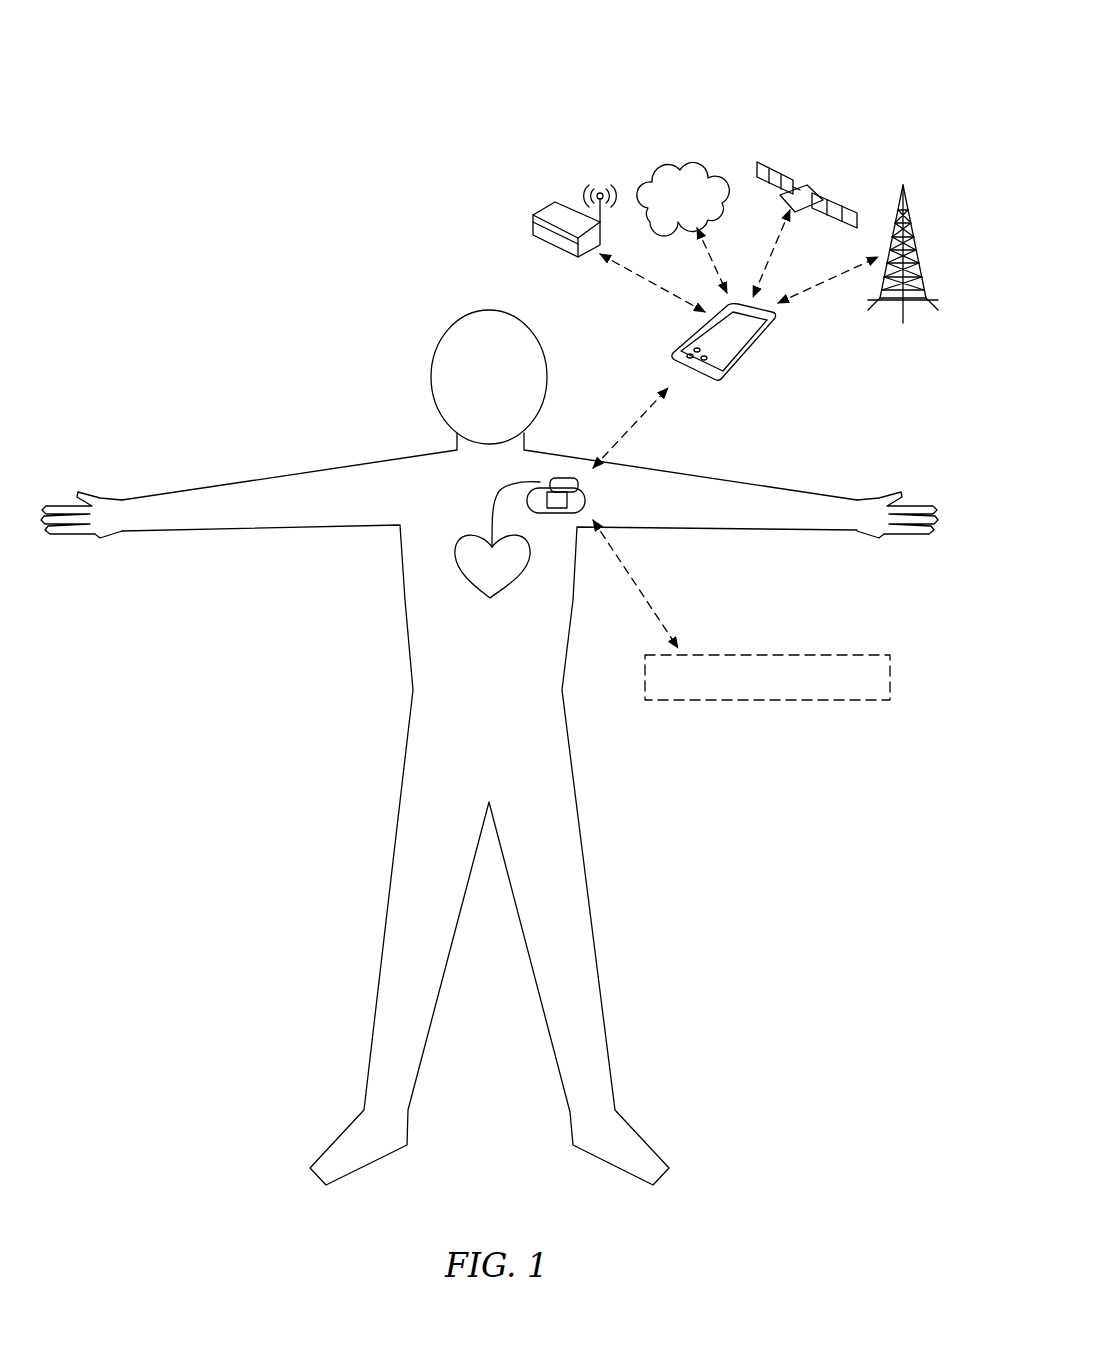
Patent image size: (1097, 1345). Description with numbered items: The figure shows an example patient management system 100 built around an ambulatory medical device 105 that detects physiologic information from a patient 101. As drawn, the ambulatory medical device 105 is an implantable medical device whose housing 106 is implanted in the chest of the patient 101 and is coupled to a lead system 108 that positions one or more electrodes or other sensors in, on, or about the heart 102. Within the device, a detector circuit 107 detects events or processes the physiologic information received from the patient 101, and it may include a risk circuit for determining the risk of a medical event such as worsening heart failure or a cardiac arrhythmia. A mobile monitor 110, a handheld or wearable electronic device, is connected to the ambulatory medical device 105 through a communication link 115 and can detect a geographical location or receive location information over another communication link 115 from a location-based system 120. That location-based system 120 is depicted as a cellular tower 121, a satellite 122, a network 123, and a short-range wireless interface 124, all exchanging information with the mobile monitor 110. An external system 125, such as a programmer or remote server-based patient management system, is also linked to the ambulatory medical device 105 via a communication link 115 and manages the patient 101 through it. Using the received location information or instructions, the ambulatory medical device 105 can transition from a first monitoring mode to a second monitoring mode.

The patient management system 100 is at (847, 46).
The patient 101 is at (407, 600).
The heart 102 is at (482, 593).
The ambulatory medical device 105 is at (556, 470).
The housing 106 is at (587, 492).
The detector circuit 107 is at (558, 513).
The lead system 108 is at (497, 496).
The mobile monitor 110 is at (754, 340).
The communication link 115 is at (660, 402).
The location-based system 120 is at (826, 143).
The cellular tower 121 is at (912, 252).
The satellite 122 is at (818, 188).
The network 123 is at (680, 160).
The short-range wireless interface 124 is at (560, 252).
The external system 125 is at (857, 655).